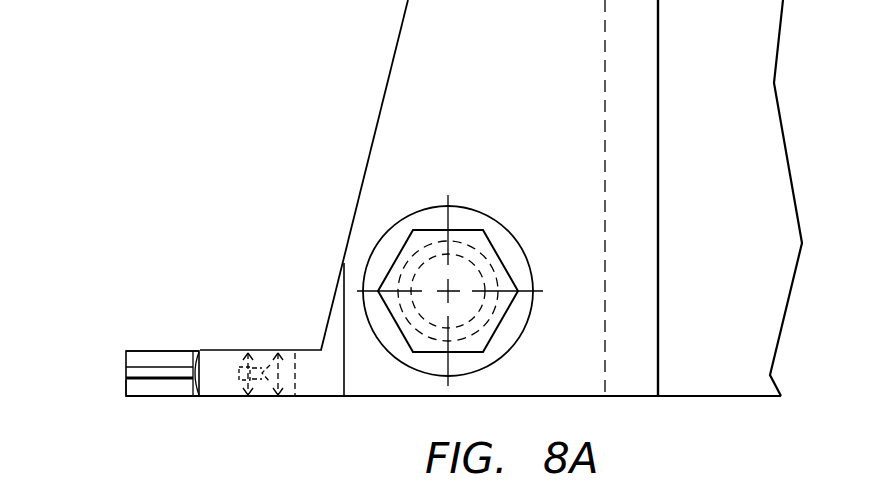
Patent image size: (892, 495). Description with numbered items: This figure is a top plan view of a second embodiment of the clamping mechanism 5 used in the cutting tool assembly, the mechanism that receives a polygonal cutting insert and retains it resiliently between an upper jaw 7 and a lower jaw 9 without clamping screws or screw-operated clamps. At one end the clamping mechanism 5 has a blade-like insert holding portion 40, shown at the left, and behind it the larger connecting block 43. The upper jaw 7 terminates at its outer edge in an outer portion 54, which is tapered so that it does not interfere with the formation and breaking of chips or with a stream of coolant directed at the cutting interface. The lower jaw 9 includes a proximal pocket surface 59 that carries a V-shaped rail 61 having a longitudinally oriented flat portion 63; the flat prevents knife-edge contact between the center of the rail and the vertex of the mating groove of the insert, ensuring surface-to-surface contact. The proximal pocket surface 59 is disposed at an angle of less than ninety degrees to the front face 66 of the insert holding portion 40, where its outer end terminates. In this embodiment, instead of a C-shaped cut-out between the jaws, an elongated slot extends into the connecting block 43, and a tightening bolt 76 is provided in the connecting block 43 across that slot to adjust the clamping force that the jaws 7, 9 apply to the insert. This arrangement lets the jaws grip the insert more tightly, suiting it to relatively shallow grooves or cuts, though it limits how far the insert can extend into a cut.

The clamping mechanism 5 is at (232, 92).
The upper jaw 7 is at (226, 360).
The lower jaw 9 is at (150, 340).
The insert holding portion 40 is at (114, 367).
The connecting block 43 is at (514, 149).
The outer portion of the upper jaw 54 is at (190, 350).
The proximal pocket surface 59 is at (121, 399).
The V-shaped rail 61 is at (167, 388).
The flat portion 63 is at (163, 372).
The front face 66 is at (125, 382).
The tightening bolt 76 is at (507, 268).